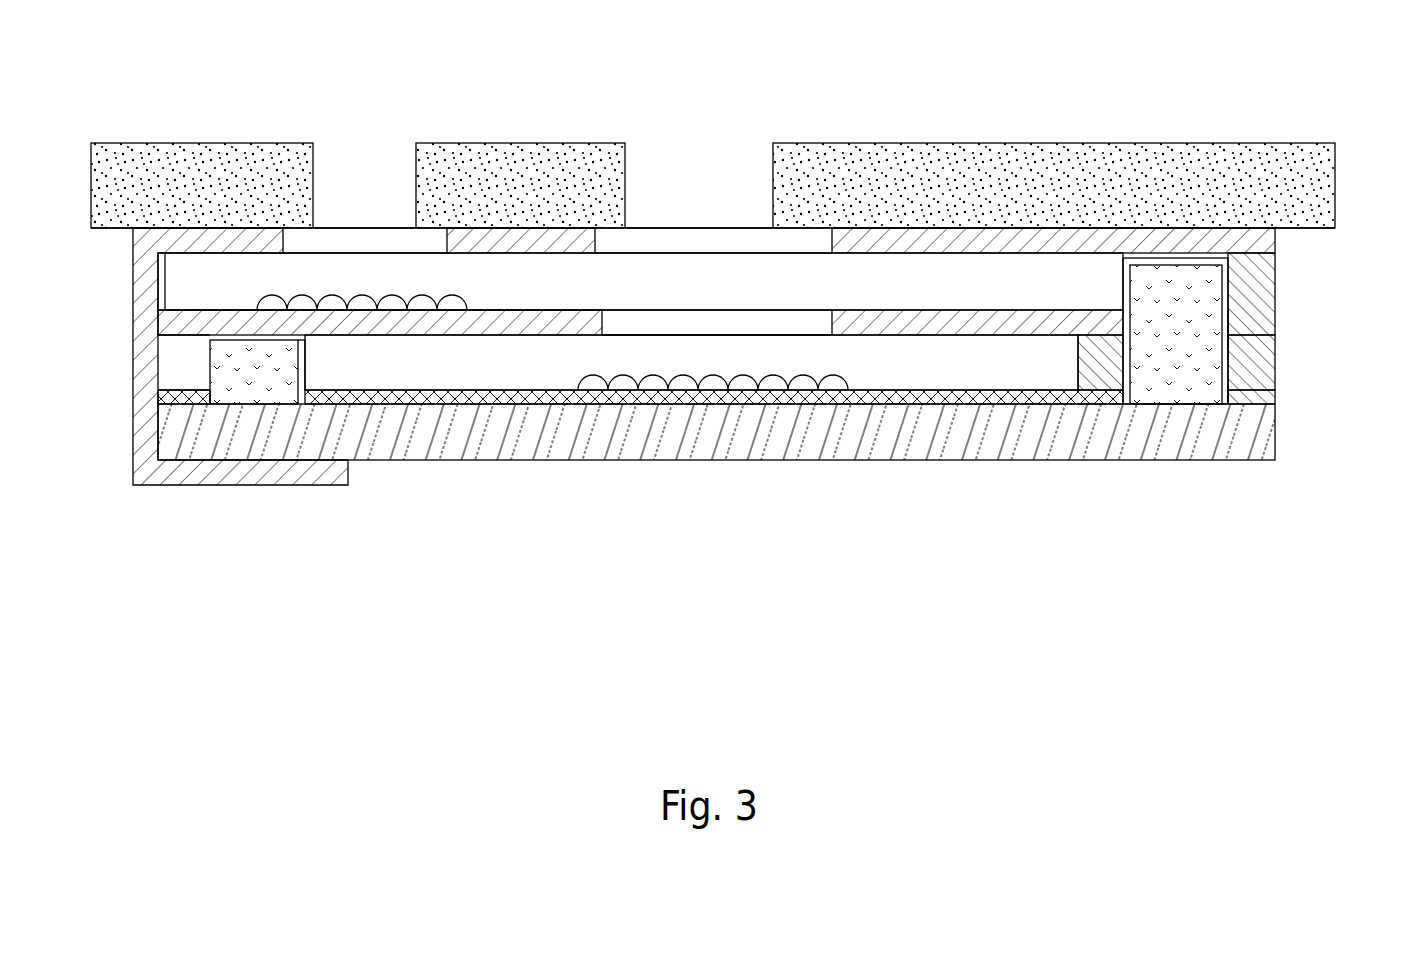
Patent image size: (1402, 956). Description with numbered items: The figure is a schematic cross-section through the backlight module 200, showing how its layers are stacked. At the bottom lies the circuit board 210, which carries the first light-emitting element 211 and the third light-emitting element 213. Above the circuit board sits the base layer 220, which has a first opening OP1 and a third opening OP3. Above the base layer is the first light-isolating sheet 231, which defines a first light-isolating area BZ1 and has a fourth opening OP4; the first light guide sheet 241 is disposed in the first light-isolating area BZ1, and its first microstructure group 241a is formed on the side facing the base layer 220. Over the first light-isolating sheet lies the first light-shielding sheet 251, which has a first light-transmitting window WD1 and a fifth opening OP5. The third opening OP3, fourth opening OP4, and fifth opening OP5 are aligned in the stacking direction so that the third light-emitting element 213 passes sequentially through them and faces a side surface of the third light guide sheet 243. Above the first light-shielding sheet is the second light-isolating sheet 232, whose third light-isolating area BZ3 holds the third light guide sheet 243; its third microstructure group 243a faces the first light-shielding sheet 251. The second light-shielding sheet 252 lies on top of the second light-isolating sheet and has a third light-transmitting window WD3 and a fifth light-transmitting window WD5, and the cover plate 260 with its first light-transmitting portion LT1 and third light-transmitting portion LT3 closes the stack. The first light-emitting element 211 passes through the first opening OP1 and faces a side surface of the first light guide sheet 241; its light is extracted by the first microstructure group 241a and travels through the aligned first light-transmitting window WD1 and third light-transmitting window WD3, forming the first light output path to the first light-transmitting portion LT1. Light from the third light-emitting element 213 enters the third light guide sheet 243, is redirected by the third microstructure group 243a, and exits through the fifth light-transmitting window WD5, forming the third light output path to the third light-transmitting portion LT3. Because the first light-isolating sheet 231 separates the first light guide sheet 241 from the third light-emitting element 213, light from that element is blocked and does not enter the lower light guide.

The backlight module 200 is at (64, 70).
The cover plate 260 is at (197, 162).
The fifth light-transmitting window WD5 is at (335, 237).
The third light-transmitting portion LT3 is at (383, 163).
The third microstructure group 243a is at (460, 302).
The third light-transmitting window WD3 is at (652, 237).
The first light-transmitting portion LT1 is at (708, 163).
The third light guide sheet 243 is at (898, 272).
The second light-shielding sheet 252 is at (143, 262).
The third light-isolating area BZ3 is at (165, 282).
The first light-shielding sheet 251 is at (160, 322).
The first light-isolating area BZ1 is at (165, 363).
The first opening OP1 is at (208, 395).
The first light-emitting element 211 is at (253, 397).
The circuit board 210 is at (398, 440).
The first microstructure group 241a is at (595, 387).
The first light-transmitting window WD1 is at (683, 325).
The first light guide sheet 241 is at (775, 360).
The base layer 220 is at (870, 395).
The third light-emitting element 213 is at (1178, 360).
The second light-isolating sheet 232 is at (1268, 278).
The fifth opening OP5 is at (1228, 322).
The fourth opening OP4 is at (1228, 345).
The first light-isolating sheet 231 is at (1258, 366).
The third opening OP3 is at (1228, 397).